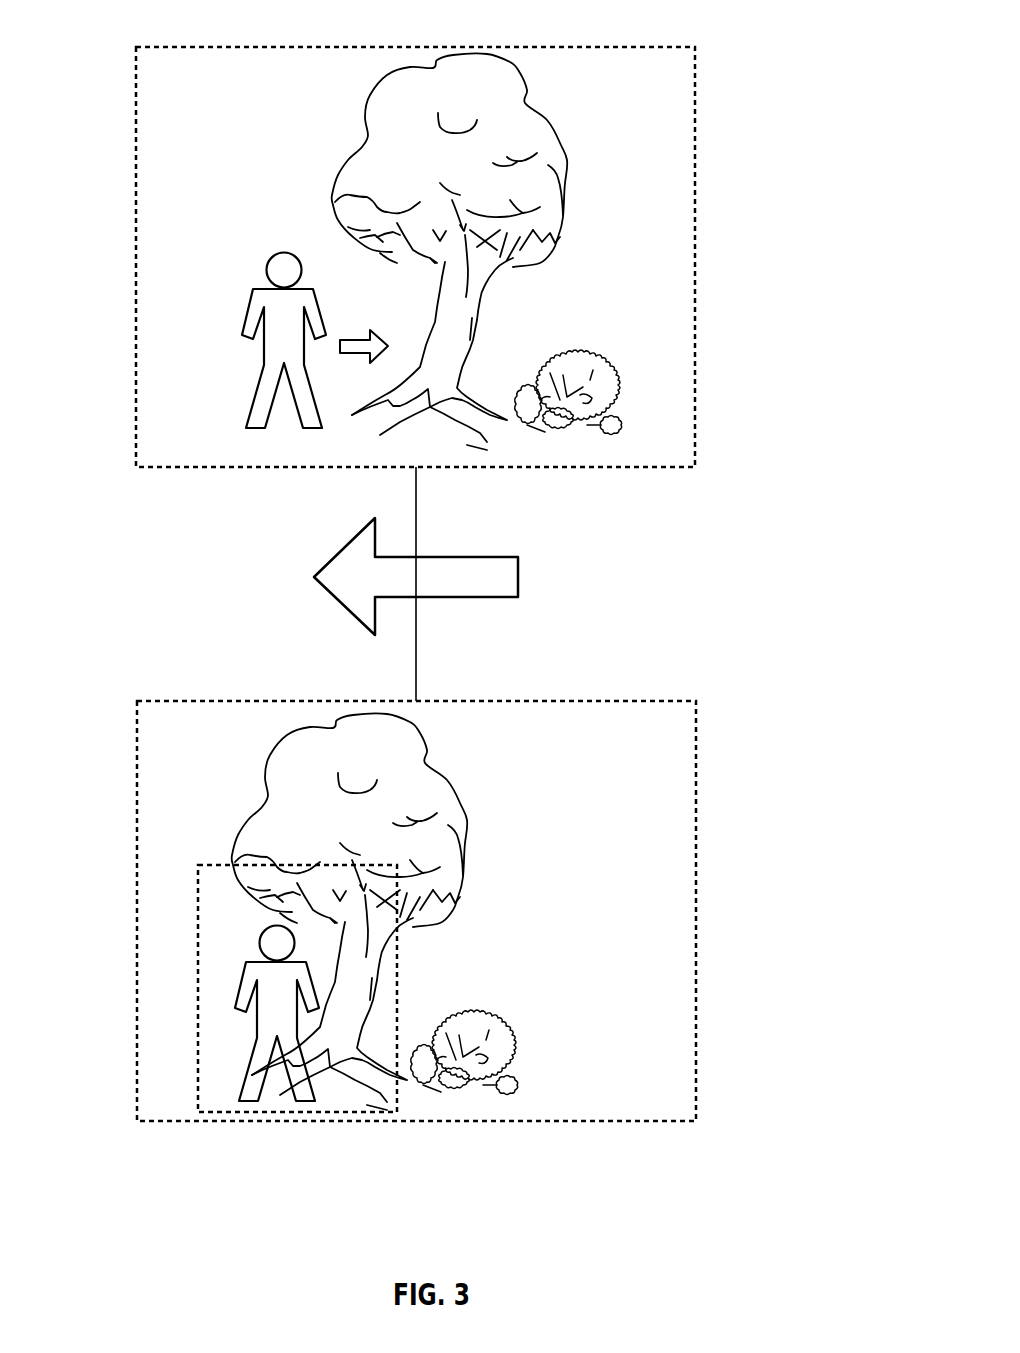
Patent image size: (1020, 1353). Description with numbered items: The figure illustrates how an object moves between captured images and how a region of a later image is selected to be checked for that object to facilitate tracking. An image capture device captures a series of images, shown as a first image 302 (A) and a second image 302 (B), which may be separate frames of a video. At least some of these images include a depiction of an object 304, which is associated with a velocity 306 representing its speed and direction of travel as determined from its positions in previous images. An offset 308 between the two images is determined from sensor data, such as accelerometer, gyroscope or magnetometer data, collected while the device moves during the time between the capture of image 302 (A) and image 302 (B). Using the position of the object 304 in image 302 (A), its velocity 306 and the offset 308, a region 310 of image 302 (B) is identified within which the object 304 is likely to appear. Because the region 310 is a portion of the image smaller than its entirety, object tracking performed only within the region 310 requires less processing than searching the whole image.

The image 302 is at (482, 560).
The object 304 is at (185, 647).
The velocity 306 is at (398, 314).
The offset 308 is at (446, 561).
The region 310 is at (220, 958).